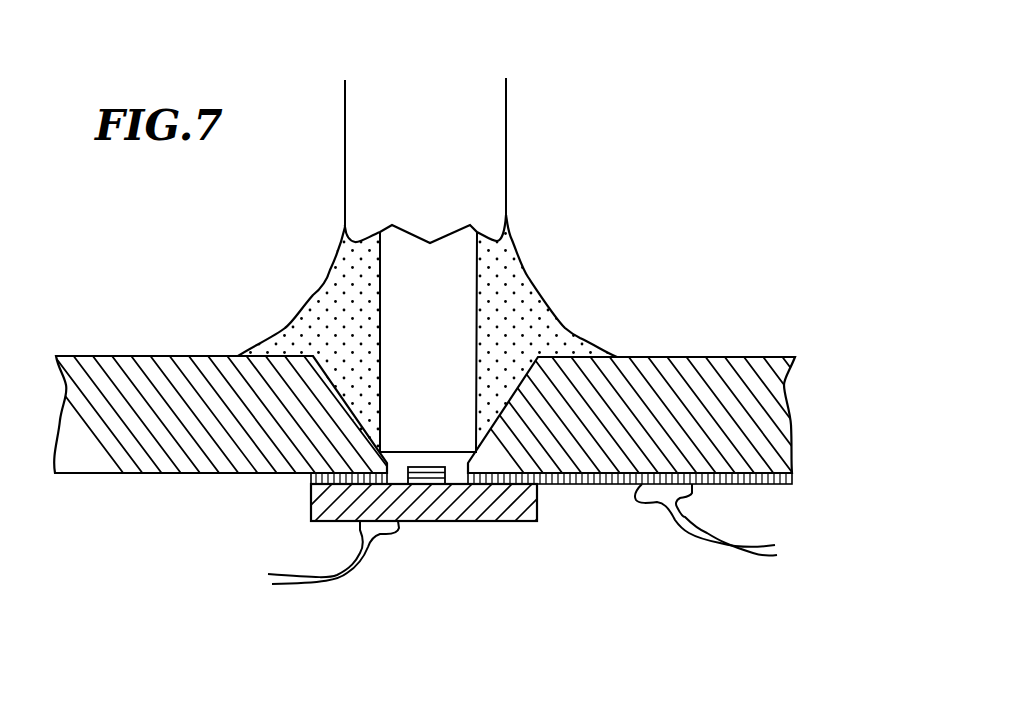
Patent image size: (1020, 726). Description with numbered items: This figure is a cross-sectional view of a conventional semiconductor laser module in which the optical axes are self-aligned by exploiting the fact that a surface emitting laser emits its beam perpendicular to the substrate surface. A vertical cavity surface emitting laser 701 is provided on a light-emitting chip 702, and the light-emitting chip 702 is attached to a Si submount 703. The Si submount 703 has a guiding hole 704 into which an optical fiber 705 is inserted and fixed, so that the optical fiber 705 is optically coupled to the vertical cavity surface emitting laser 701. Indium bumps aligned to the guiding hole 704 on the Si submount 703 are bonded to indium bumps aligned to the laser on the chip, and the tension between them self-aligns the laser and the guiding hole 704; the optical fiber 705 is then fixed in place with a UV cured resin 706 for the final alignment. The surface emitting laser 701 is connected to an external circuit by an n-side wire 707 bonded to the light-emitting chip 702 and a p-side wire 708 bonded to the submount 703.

The vertical cavity surface emitting laser 701 is at (457, 486).
The light-emitting chip 702 is at (418, 510).
The Si submount 703 is at (232, 447).
The guiding hole 704 is at (443, 455).
The optical fiber 705 is at (458, 133).
The UV cured resin 706 is at (527, 297).
The n-side wire 707 is at (310, 582).
The p-side wire 708 is at (750, 550).